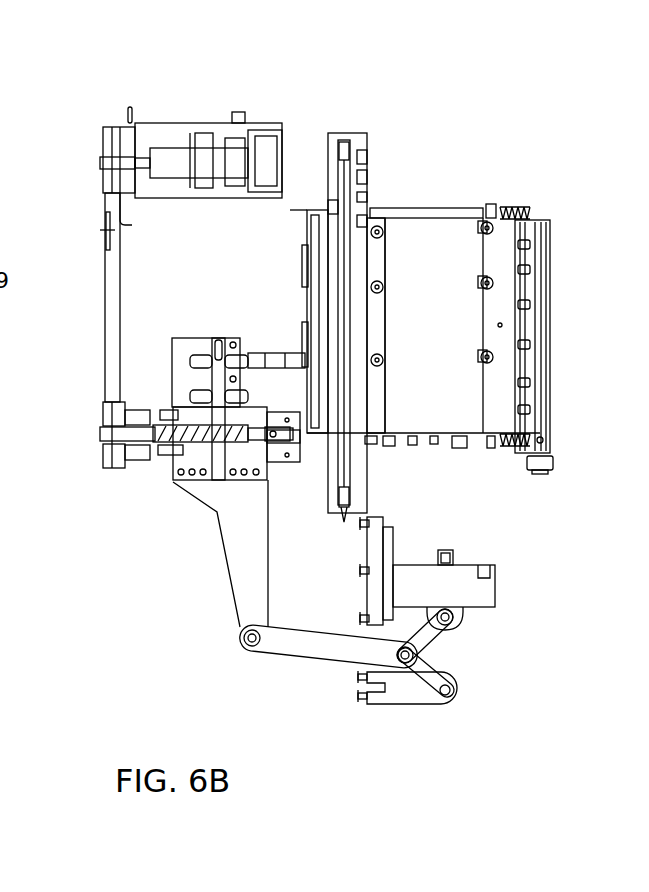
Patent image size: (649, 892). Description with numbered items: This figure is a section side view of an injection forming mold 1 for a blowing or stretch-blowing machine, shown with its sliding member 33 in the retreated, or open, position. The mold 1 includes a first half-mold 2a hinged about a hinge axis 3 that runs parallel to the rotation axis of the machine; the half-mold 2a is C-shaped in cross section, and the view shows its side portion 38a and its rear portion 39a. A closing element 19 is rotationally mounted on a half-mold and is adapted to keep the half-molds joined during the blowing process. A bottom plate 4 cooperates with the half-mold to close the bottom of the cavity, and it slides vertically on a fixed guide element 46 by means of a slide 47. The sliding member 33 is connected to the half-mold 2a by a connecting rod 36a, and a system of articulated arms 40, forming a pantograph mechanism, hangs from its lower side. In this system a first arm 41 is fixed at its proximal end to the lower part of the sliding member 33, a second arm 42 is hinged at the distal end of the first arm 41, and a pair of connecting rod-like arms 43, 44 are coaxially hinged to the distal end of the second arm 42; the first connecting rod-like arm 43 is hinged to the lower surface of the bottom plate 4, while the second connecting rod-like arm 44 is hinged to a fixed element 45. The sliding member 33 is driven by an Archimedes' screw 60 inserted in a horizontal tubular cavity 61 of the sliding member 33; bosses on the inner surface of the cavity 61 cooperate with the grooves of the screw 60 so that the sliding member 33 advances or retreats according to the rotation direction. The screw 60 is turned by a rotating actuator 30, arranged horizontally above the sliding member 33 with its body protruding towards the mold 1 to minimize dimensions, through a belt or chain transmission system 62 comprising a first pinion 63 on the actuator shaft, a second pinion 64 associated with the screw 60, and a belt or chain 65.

The injection forming mold 1 is at (437, 116).
The first half-mold 2a is at (442, 228).
The hinge axis 3 is at (343, 124).
The bottom plate 4 is at (485, 588).
The closing element 19 is at (544, 331).
The actuator 30 is at (203, 122).
The sliding member 33 is at (192, 338).
The connecting rod 36a is at (263, 352).
The side portion 38a is at (411, 302).
The rear portion 39a is at (299, 233).
The system of articulated arms 40 is at (208, 640).
The first arm 41 is at (232, 566).
The second arm 42 is at (302, 646).
The first connecting rod-like arm 43 is at (432, 632).
The second connecting rod-like arm 44 is at (430, 672).
The fixed element 45 is at (398, 702).
The guide element 46 is at (368, 545).
The slide 47 is at (398, 566).
The Archimedes' screw 60 is at (177, 412).
The tubular cavity 61 is at (242, 470).
The transmission system 62 is at (96, 328).
The first pinion 63 is at (108, 147).
The second pinion 64 is at (112, 450).
The belt or chain 65 is at (118, 288).